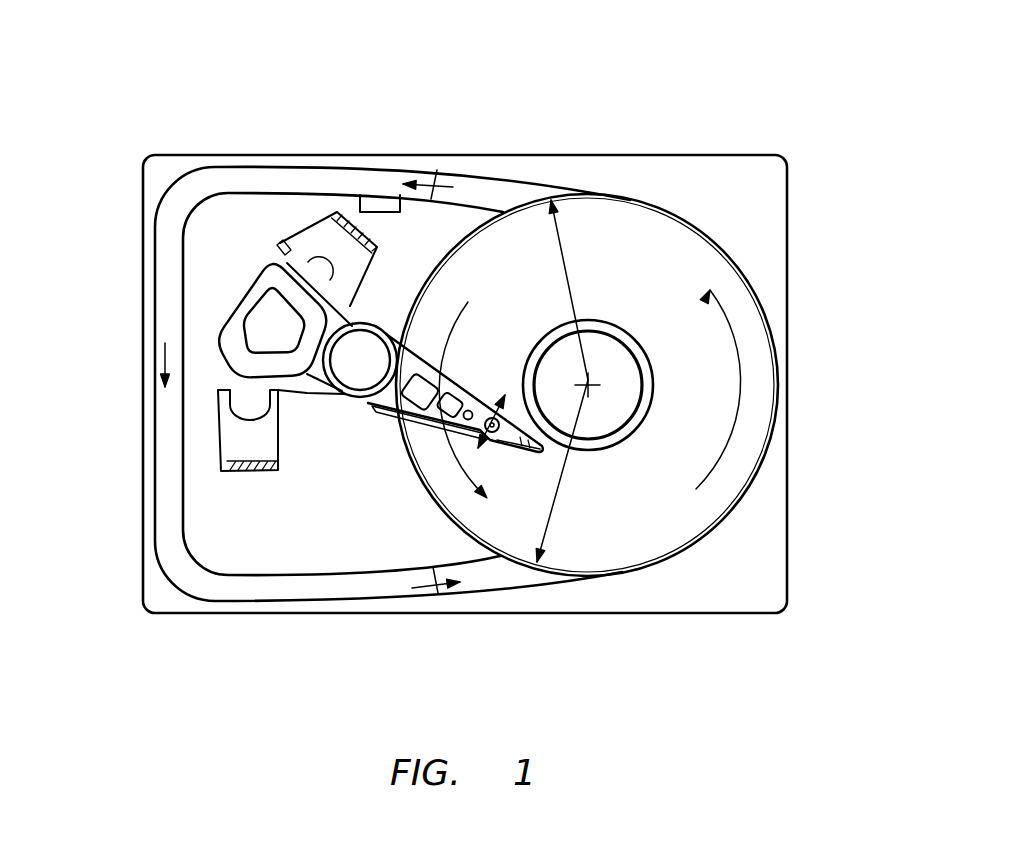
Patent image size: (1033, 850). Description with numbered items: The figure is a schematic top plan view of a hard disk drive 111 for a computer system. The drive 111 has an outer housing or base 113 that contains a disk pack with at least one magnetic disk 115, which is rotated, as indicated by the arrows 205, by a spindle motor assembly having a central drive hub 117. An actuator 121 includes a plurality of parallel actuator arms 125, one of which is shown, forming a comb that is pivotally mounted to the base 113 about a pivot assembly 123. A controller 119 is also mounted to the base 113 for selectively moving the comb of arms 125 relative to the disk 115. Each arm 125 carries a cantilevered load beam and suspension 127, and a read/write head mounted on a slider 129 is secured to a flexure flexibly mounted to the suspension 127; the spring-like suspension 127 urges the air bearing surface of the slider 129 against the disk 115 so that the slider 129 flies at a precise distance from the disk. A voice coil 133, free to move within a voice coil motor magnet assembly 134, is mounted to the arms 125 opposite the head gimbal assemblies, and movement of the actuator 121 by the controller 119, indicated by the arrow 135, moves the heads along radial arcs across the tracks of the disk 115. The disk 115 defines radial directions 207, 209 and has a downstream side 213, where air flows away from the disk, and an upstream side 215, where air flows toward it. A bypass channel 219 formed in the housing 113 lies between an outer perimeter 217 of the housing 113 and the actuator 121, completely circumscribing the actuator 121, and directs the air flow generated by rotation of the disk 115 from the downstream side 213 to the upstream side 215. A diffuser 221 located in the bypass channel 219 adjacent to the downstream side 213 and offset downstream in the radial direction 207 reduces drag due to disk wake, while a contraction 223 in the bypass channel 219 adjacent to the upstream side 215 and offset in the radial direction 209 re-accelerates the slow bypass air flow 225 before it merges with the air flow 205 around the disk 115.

The hard disk drive 111 is at (750, 55).
The base 113 is at (655, 155).
The magnetic disk 115 is at (665, 227).
The central drive hub 117 is at (598, 318).
The controller 119 is at (393, 216).
The actuator 121 is at (302, 483).
The pivot assembly 123 is at (360, 405).
The actuator arm 125 is at (412, 350).
The suspension 127 is at (454, 382).
The slider 129 is at (522, 443).
The voice coil 133 is at (252, 272).
The voice coil motor magnet assembly 134 is at (318, 236).
The arrow indicating actuator movement 135 is at (478, 448).
The rotation arrows 205 is at (470, 308).
The radial direction 207 is at (568, 268).
The radial direction 209 is at (560, 500).
The downstream side 213 is at (495, 213).
The upstream side 215 is at (523, 567).
The outer perimeter 217 is at (142, 245).
The bypass channel 219 is at (162, 441).
The diffuser 221 is at (493, 184).
The contraction 223 is at (498, 582).
The slow bypass air flow 225 is at (428, 588).